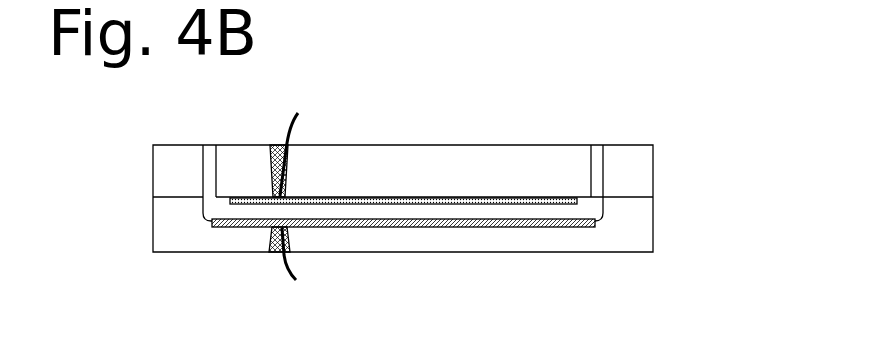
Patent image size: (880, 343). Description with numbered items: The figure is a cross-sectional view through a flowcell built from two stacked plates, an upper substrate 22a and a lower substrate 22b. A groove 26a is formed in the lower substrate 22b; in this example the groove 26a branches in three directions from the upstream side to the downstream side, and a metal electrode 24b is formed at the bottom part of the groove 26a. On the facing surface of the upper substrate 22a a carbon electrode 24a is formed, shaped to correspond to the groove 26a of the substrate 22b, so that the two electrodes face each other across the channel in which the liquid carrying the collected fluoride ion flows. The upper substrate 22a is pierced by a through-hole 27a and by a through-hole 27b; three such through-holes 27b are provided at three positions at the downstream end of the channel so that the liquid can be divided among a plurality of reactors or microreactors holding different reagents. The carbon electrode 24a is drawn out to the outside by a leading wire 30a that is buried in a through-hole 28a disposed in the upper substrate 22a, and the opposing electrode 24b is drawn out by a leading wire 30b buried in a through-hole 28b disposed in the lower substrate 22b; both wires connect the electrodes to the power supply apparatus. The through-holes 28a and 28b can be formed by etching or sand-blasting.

The substrate 22a is at (640, 168).
The substrate 22b is at (640, 231).
The carbon electrode 24a is at (450, 197).
The metal electrode 24b is at (455, 232).
The groove 26a is at (530, 208).
The through-hole 27a is at (212, 152).
The through-hole 27b is at (597, 160).
The through-hole 28a is at (288, 172).
The through-hole 28b is at (292, 248).
The leading wire 30a is at (283, 126).
The leading wire 30b is at (282, 256).